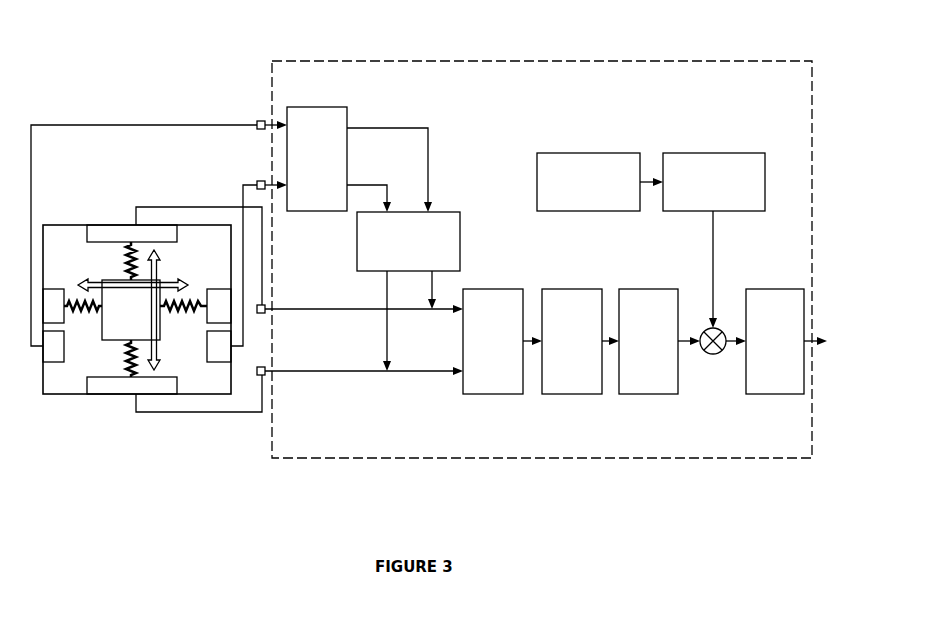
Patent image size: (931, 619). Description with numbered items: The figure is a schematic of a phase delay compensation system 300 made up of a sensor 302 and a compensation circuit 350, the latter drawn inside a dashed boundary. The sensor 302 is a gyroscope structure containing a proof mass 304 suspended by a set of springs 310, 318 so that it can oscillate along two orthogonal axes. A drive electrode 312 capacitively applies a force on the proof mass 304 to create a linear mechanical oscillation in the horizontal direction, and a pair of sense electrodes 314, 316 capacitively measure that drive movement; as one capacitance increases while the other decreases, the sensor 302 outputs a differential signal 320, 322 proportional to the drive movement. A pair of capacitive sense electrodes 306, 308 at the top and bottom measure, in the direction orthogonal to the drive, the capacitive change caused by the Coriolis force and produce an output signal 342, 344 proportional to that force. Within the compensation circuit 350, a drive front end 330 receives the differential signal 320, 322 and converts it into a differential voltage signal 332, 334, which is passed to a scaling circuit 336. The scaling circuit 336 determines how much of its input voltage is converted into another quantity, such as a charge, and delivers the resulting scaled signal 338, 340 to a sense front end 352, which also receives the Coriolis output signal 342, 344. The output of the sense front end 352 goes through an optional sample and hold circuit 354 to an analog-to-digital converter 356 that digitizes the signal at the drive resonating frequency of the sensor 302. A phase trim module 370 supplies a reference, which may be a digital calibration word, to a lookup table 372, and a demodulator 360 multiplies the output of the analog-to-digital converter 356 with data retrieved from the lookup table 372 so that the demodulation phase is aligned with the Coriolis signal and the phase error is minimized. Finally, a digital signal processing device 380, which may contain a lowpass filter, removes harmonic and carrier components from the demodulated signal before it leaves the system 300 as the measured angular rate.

The phase delay compensation system 300 is at (119, 38).
The sensor 302 is at (121, 224).
The proof mass 304 is at (105, 282).
The capacitive sense electrode 306 is at (179, 239).
The capacitive sense electrode 308 is at (179, 385).
The spring 310 is at (185, 313).
The drive electrode 312 is at (220, 288).
The sense electrode 314 is at (52, 362).
The sense electrode 316 is at (222, 362).
The spring 318 is at (128, 253).
The differential signal 320 is at (257, 122).
The differential signal 322 is at (257, 182).
The drive front end 330 is at (337, 107).
The differential voltage signal 332 is at (414, 127).
The differential voltage signal 334 is at (368, 185).
The scaling circuit 336 is at (447, 212).
The scaled signal 338 is at (434, 279).
The scaled signal 340 is at (387, 333).
The output signal 342 is at (280, 309).
The output signal 344 is at (281, 371).
The compensation circuit 350 is at (573, 61).
The sense front end 352 is at (488, 394).
The sample and hold circuit 354 is at (573, 394).
The analog-to-digital converter 356 is at (651, 394).
The demodulator 360 is at (714, 355).
The phase trim module 370 is at (613, 153).
The lookup table 372 is at (745, 153).
The digital signal processing device 380 is at (777, 394).